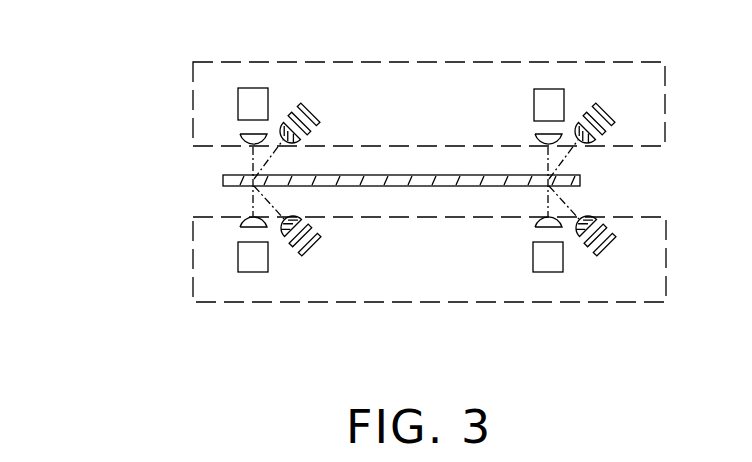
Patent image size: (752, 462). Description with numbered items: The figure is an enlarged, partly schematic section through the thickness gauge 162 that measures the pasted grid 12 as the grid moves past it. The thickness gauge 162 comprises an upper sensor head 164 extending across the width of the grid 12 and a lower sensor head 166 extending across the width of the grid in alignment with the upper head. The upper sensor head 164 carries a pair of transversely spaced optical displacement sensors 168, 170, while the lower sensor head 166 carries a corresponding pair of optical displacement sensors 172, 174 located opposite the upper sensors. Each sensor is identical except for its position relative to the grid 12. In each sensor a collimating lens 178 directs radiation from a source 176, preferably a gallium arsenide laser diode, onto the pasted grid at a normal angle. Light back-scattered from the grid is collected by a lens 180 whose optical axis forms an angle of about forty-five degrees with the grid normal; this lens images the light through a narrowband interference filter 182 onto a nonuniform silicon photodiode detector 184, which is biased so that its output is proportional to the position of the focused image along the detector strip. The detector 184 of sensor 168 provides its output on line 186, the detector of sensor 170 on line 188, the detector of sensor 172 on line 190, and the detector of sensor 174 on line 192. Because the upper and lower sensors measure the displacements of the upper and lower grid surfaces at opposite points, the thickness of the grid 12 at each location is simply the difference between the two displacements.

The pasted grid 12 is at (401, 176).
The thickness gauge 162 is at (116, 164).
The upper sensor head 164 is at (452, 61).
The lower sensor head 166 is at (420, 304).
The optical displacement sensor 168 is at (284, 84).
The optical displacement sensor 170 is at (621, 81).
The optical displacement sensor 172 is at (261, 285).
The optical displacement sensor 174 is at (605, 277).
The radiation source 176 is at (243, 90).
The collimating lens 178 is at (240, 134).
The lens 180 is at (295, 144).
The interference filter 182 is at (295, 118).
The photodiode detector 184 is at (318, 122).
The output line 186 is at (310, 112).
The output line 188 is at (605, 111).
The output line 190 is at (314, 247).
The output line 192 is at (602, 243).